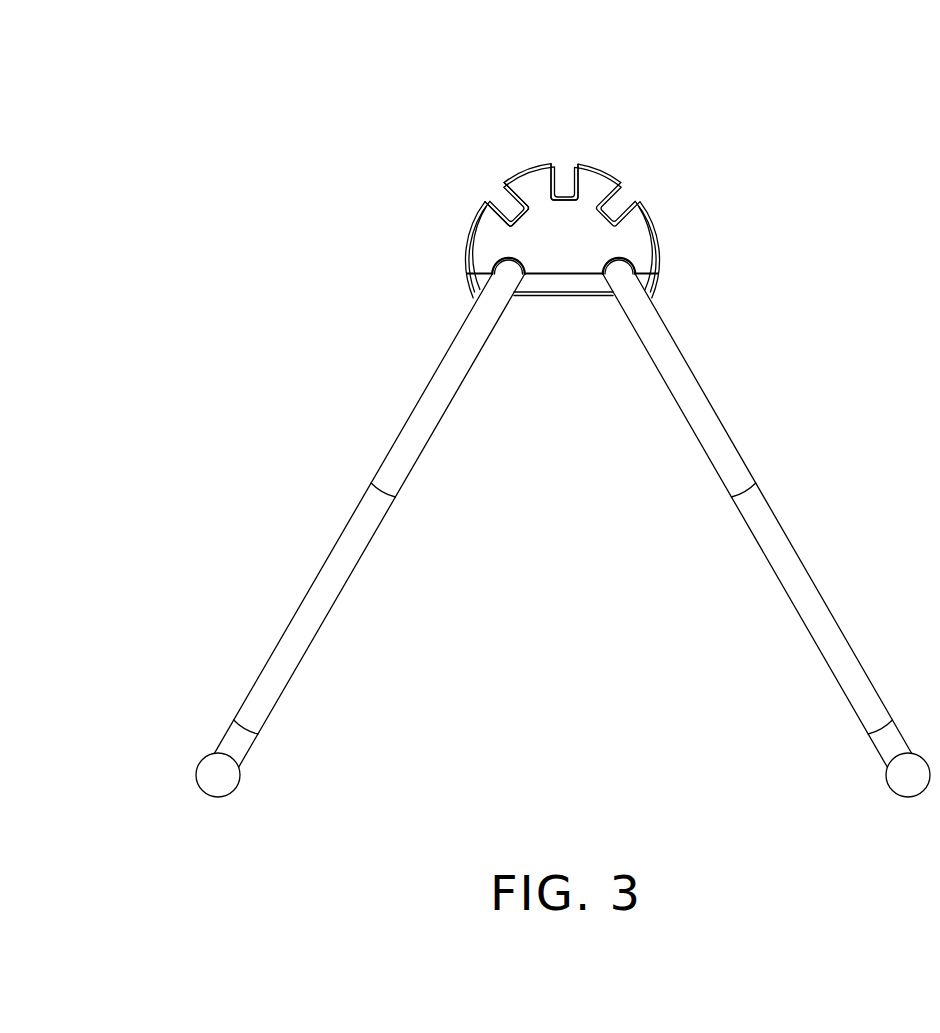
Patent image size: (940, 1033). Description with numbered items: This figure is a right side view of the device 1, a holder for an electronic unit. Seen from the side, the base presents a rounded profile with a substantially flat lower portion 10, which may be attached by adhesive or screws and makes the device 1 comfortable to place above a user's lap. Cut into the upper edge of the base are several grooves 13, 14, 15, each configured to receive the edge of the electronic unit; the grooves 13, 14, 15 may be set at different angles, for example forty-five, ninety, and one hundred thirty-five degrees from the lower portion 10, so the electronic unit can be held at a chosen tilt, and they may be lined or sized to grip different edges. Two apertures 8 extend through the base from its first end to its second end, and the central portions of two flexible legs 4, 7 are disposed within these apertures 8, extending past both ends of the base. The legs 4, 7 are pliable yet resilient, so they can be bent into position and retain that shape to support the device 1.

The device 1 is at (538, 425).
The flexible leg 4 is at (360, 535).
The flexible leg 7 is at (766, 535).
The apertures 8 is at (503, 339).
The lower portion 10 is at (559, 384).
The groove 13 is at (569, 176).
The groove 14 is at (551, 127).
The groove 15 is at (458, 208).